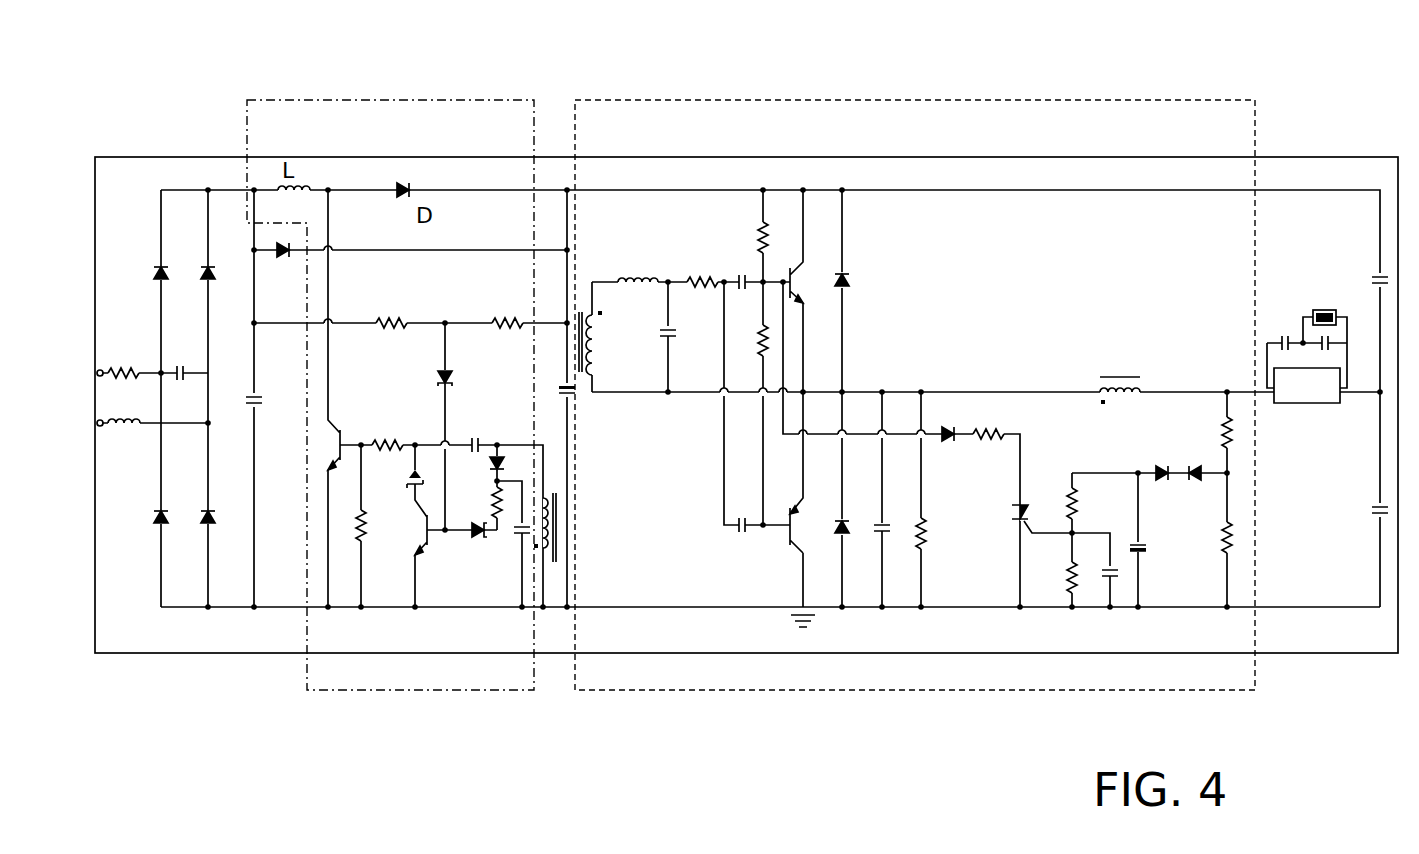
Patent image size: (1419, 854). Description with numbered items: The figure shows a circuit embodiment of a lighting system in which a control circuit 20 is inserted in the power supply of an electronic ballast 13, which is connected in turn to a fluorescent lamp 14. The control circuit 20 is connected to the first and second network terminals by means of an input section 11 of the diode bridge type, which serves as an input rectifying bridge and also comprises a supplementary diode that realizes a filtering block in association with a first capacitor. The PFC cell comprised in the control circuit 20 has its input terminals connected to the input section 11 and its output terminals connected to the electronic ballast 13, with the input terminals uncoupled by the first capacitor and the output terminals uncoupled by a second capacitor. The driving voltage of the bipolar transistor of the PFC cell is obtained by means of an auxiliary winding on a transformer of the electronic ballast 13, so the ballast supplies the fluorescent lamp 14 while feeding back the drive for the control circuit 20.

The input section 11 is at (225, 222).
The control circuit 20 is at (473, 125).
The electronic ballast 13 is at (962, 125).
The fluorescent lamp 14 is at (1305, 380).